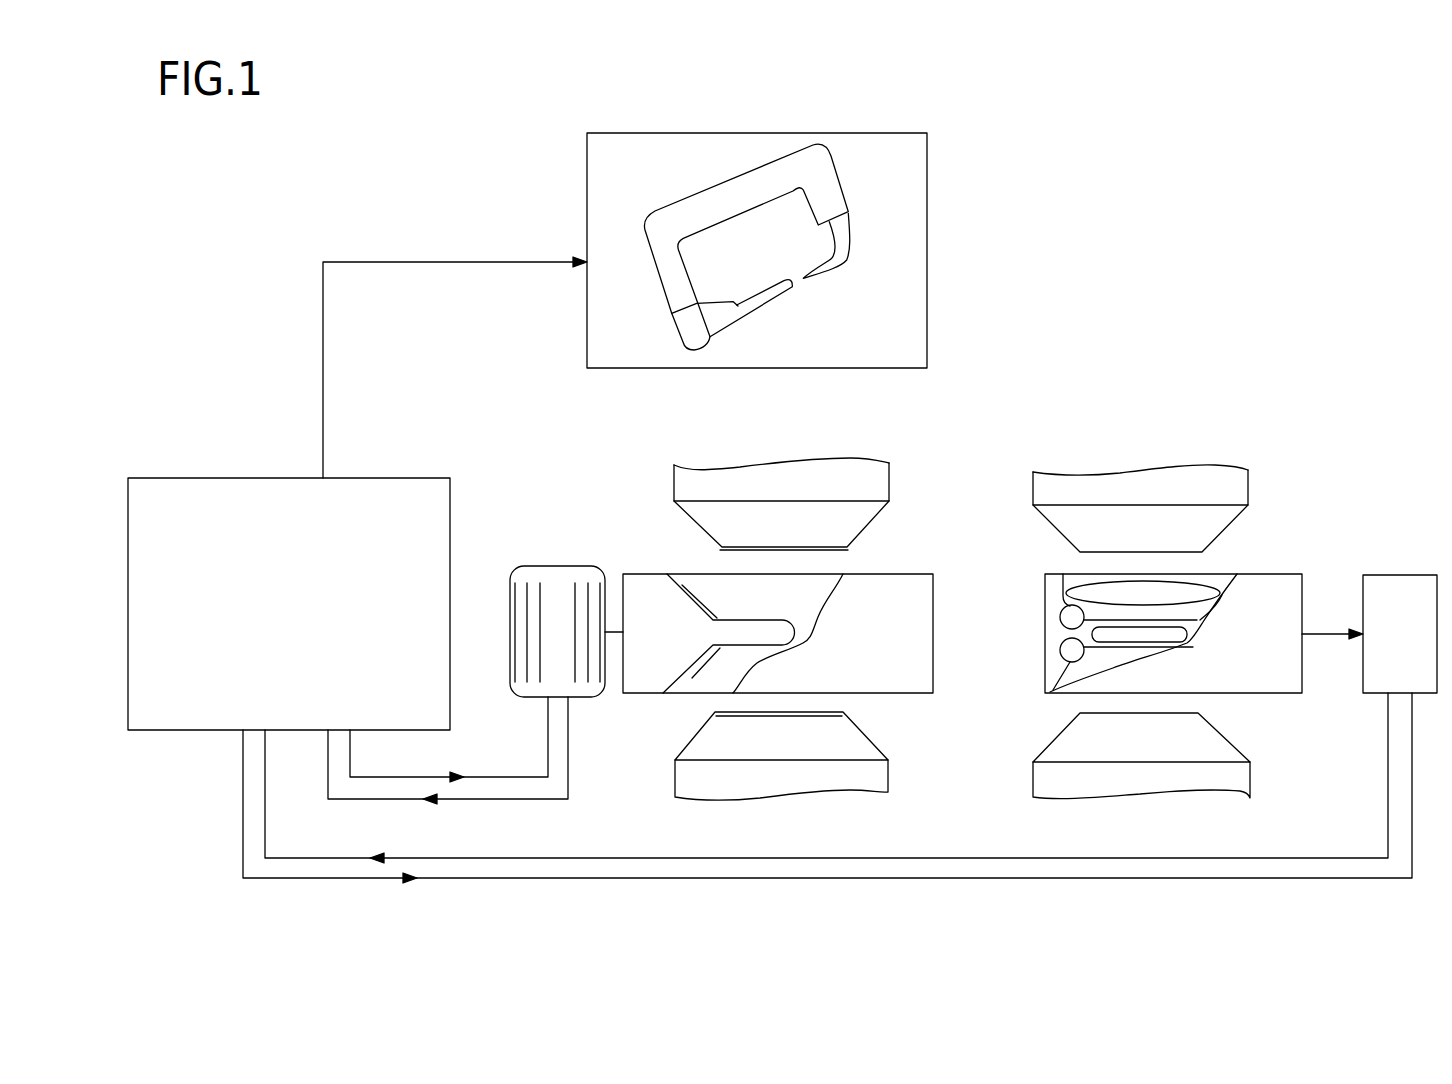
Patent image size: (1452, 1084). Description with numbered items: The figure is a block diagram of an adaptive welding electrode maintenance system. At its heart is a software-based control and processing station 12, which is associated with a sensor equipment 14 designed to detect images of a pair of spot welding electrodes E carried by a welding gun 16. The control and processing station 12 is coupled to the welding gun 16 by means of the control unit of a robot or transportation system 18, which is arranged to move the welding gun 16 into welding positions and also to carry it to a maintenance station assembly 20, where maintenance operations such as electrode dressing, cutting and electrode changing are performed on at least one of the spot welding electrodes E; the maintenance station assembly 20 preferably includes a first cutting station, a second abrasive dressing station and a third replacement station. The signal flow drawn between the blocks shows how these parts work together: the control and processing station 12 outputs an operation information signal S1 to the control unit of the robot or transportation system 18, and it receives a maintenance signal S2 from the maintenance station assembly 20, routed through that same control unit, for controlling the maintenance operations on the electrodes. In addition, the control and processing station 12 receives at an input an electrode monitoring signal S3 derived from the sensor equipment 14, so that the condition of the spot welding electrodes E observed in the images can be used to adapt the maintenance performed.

The control and processing station 12 is at (1406, 612).
The sensor equipment 14 is at (1043, 620).
The welding gun 16 is at (637, 177).
The robot or transportation system 18 is at (237, 505).
The maintenance station assembly 20 is at (572, 518).
The spot welding electrodes E is at (774, 297).
The operation information signal S1 is at (490, 780).
The maintenance signal S2 is at (570, 770).
The electrode monitoring signal S3 is at (1318, 634).